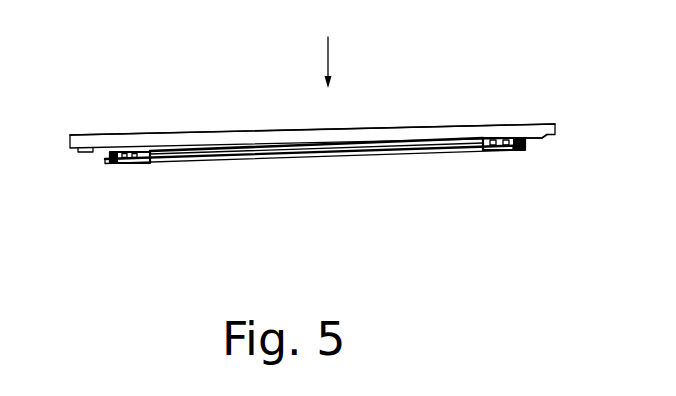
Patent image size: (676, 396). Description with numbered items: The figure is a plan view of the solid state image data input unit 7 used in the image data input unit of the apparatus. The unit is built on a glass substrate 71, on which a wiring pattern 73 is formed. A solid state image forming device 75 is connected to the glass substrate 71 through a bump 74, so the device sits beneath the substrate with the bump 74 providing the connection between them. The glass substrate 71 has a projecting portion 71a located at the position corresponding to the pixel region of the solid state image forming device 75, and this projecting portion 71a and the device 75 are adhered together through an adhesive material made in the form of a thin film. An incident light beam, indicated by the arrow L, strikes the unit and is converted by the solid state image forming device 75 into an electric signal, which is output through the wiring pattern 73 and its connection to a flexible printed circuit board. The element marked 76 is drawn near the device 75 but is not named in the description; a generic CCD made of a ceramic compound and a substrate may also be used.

The solid state image data input unit 7 is at (238, 131).
The glass substrate 71 is at (133, 134).
The projecting portion 71a is at (295, 150).
The wiring pattern 73 is at (88, 153).
The bump 74 is at (138, 161).
The solid state image forming device 75 is at (400, 155).
The light source strip 76 is at (436, 142).
The light direction L is at (328, 60).